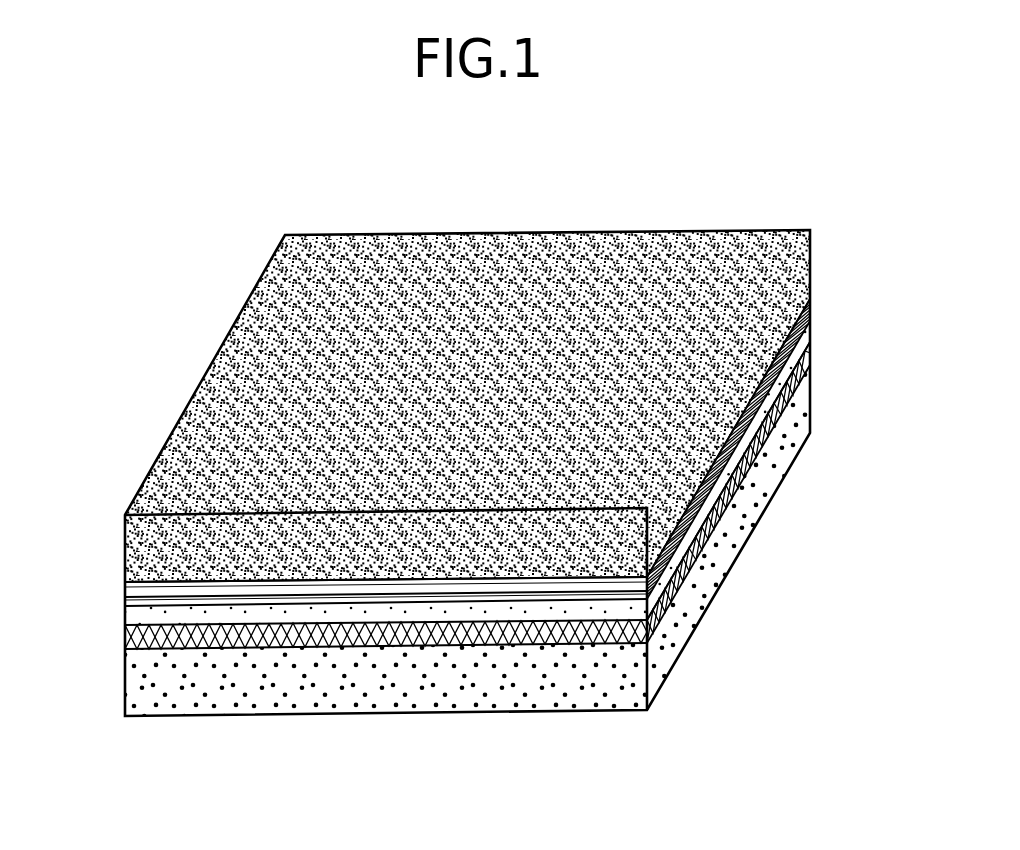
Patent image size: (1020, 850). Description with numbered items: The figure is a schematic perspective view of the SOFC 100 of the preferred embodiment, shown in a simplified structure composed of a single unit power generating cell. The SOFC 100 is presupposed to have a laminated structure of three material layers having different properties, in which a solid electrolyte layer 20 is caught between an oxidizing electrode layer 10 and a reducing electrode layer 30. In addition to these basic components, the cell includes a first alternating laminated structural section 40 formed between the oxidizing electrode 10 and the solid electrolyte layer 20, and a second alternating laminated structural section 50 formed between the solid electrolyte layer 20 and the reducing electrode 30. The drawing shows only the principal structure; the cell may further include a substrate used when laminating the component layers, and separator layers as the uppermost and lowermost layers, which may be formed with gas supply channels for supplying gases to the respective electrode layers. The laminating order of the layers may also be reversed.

The SOFC (unit cell) 100 is at (638, 183).
The oxidizing electrode layer 10 is at (812, 278).
The solid electrolyte layer 20 is at (812, 335).
The reducing electrode layer 30 is at (805, 400).
The first alternating laminated structural section 40 is at (125, 634).
The second alternating laminated structural section 50 is at (125, 590).